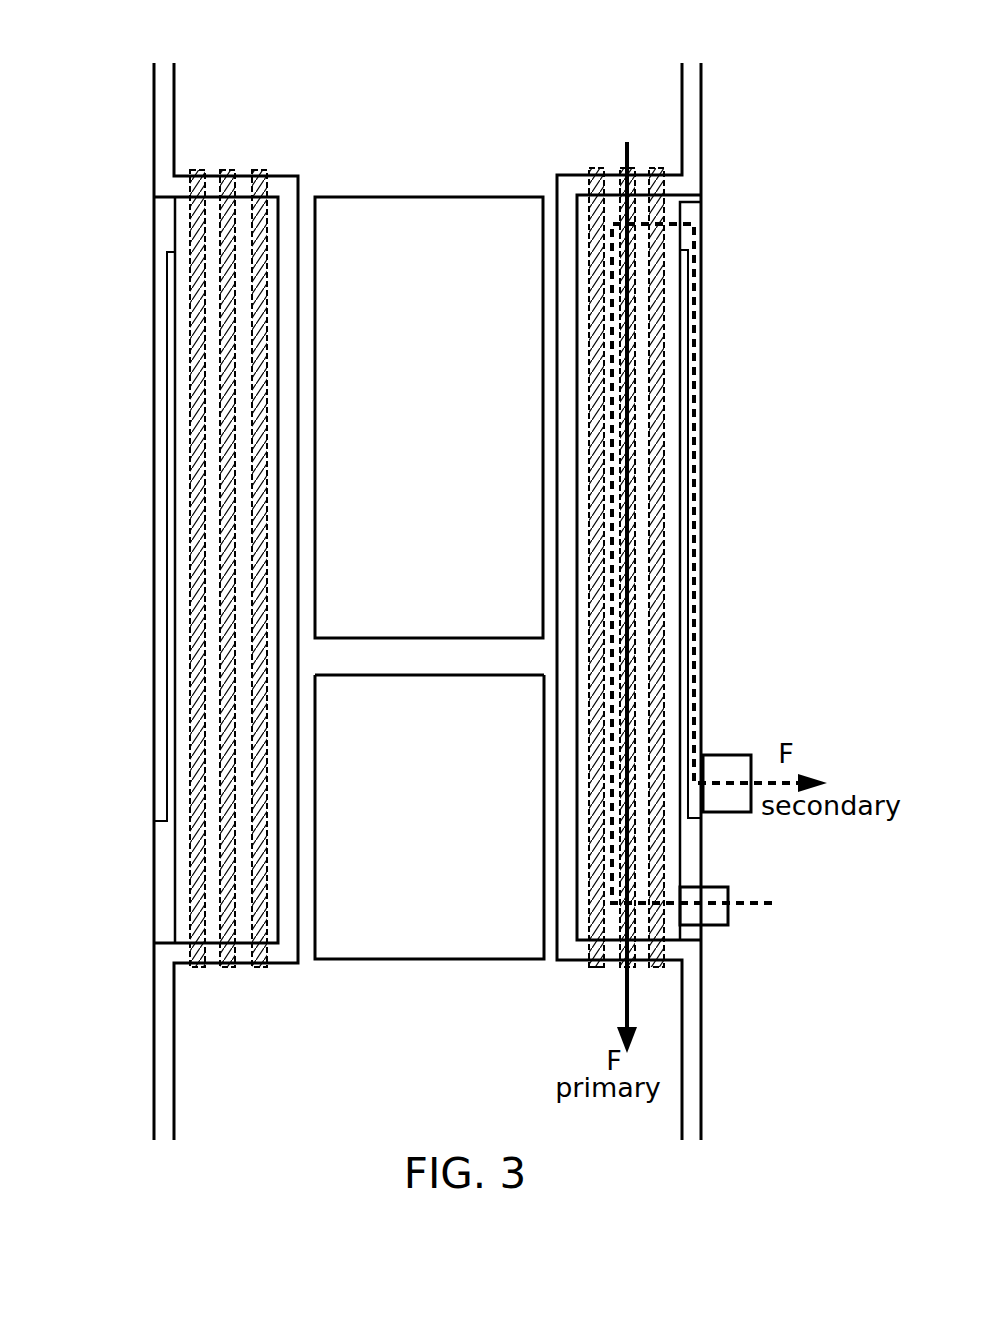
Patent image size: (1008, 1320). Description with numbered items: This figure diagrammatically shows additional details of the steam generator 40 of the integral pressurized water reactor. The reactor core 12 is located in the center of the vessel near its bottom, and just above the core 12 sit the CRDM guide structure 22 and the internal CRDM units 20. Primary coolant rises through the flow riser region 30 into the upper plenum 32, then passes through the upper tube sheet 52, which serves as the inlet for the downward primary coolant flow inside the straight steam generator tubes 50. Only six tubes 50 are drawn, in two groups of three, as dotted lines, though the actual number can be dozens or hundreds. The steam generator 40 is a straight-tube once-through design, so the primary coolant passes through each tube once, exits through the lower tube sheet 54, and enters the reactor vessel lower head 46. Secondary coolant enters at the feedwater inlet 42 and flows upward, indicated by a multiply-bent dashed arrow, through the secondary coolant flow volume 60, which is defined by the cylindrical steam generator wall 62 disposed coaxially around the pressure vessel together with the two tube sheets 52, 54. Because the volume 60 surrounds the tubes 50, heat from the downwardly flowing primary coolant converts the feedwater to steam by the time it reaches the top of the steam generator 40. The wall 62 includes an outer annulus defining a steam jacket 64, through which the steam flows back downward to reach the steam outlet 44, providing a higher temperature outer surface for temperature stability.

The reactor core 12 is at (429, 817).
The internal CRDM units 20 is at (429, 417).
The CRDM guide structure 22 is at (429, 417).
The flow riser region 30 is at (349, 653).
The upper plenum 32 is at (433, 118).
The steam generator 40 is at (703, 525).
The feedwater inlet 42 is at (720, 885).
The steam outlet 44 is at (743, 760).
The reactor vessel lower head 46 is at (431, 1026).
The steam generator tubes 50 is at (159, 568).
The upper tube sheet 52 is at (612, 173).
The lower tube sheet 54 is at (612, 960).
The secondary coolant flow volume 60 is at (217, 653).
The cylindrical steam generator wall 62 is at (152, 508).
The steam jacket 64 is at (165, 565).